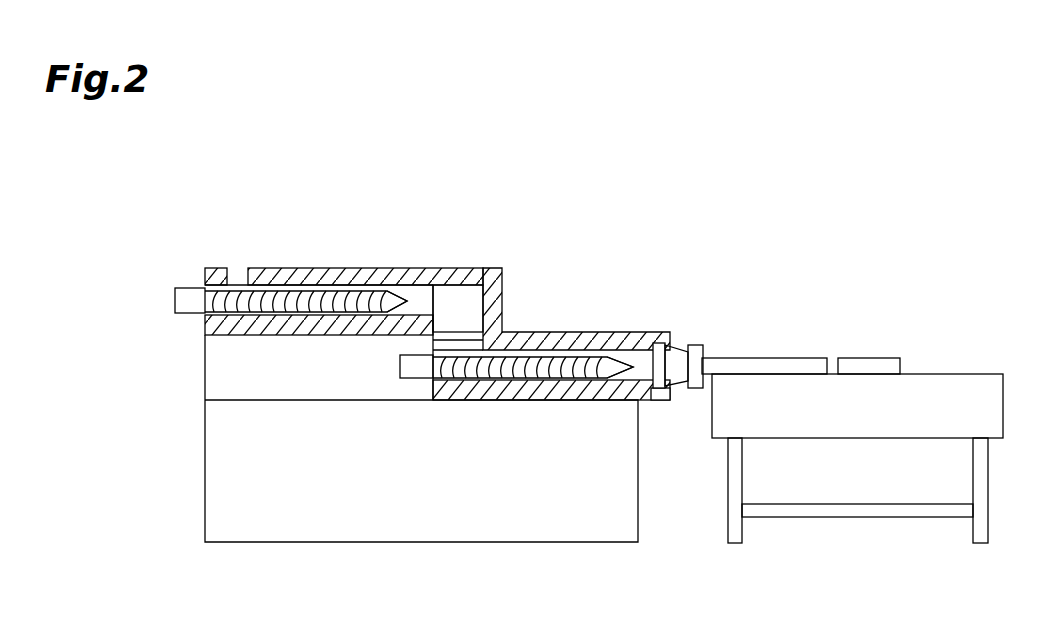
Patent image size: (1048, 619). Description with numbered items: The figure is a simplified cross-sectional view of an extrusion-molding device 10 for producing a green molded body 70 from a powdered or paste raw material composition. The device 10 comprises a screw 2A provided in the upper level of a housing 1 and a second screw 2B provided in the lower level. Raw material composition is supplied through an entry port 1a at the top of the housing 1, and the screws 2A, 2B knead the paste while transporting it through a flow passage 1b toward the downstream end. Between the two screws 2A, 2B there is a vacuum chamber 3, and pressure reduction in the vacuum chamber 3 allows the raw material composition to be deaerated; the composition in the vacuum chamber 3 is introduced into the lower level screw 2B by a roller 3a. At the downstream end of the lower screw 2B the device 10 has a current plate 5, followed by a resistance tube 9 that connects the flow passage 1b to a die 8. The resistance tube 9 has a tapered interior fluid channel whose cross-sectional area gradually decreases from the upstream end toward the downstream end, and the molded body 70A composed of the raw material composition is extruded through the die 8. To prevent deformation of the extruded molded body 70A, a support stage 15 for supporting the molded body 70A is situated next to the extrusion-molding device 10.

The housing 1 is at (424, 268).
The entry port 1a is at (237, 268).
The flow passage 1b is at (399, 292).
The screw 2A is at (312, 300).
The screw 2B is at (552, 362).
The vacuum chamber 3 is at (470, 271).
The roller 3a is at (462, 340).
The current plate 5 is at (650, 347).
The die 8 is at (696, 345).
The resistance tube 9 is at (683, 354).
The extrusion-molding device 10 is at (607, 239).
The support stage 15 is at (951, 374).
The green molded body 70 is at (870, 358).
The molded body 70A is at (762, 358).